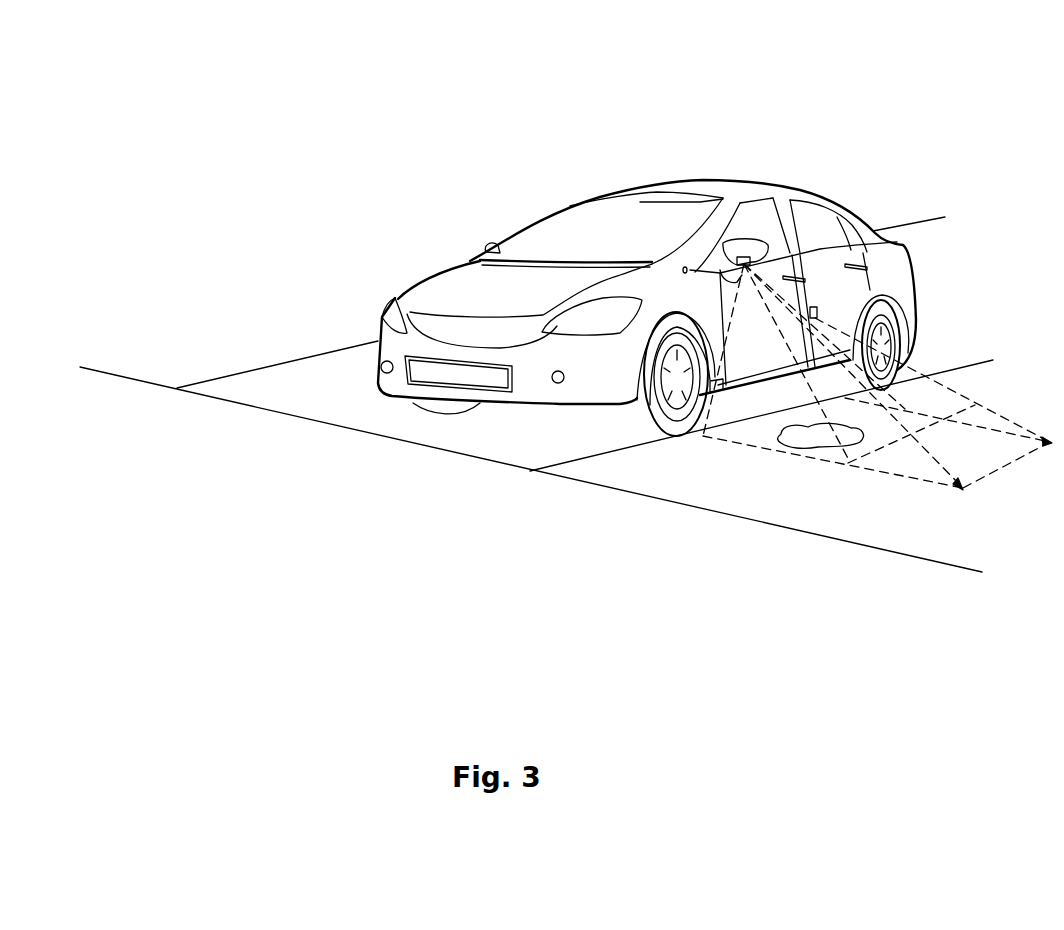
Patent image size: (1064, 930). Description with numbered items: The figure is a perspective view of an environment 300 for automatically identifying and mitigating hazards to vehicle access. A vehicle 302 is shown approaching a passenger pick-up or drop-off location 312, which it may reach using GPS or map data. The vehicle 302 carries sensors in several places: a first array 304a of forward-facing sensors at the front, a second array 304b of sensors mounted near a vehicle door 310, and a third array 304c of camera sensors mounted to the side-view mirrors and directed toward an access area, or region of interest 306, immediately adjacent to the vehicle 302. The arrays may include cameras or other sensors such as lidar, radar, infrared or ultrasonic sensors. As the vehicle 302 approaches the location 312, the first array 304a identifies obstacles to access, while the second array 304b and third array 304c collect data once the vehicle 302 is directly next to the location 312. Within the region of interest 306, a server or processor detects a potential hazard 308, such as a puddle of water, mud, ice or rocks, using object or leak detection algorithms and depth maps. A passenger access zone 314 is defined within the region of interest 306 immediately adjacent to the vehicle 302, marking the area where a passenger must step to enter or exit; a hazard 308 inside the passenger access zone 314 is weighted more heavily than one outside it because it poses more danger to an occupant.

The environment 300 is at (233, 108).
The vehicle 302 is at (625, 238).
The first array of forward-facing sensors 304a is at (559, 384).
The second array of sensors 304b is at (815, 307).
The third array of sensors 304c is at (744, 257).
The region of interest 306 is at (904, 484).
The potential hazard 308 is at (800, 438).
The vehicle door 310 is at (780, 334).
The passenger pick-up or drop-off location 312 is at (412, 432).
The passenger access zone 314 is at (908, 434).